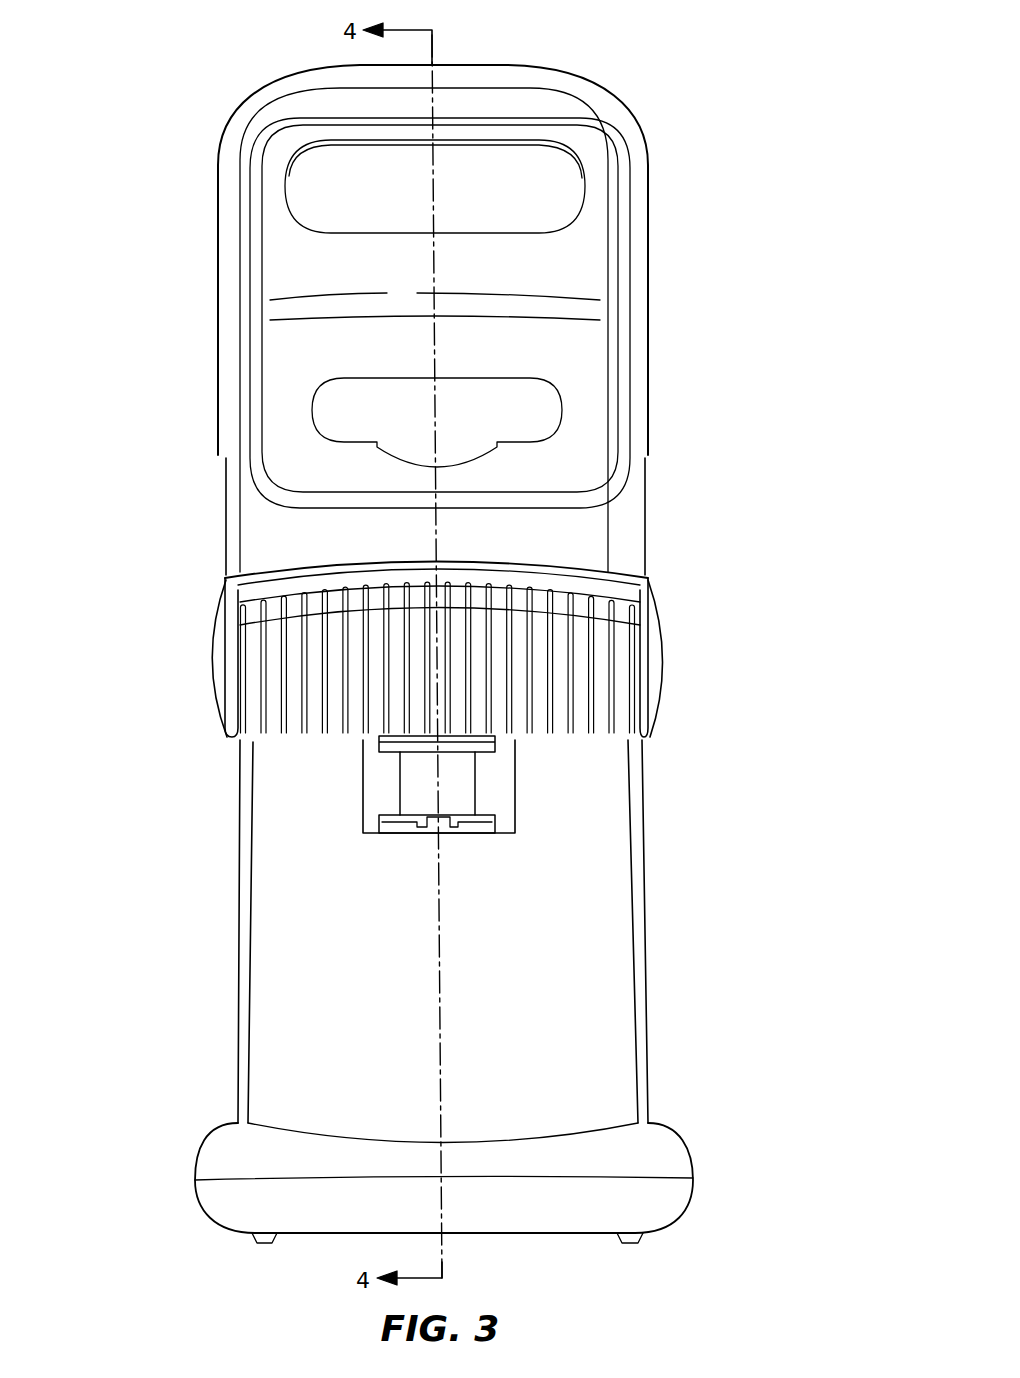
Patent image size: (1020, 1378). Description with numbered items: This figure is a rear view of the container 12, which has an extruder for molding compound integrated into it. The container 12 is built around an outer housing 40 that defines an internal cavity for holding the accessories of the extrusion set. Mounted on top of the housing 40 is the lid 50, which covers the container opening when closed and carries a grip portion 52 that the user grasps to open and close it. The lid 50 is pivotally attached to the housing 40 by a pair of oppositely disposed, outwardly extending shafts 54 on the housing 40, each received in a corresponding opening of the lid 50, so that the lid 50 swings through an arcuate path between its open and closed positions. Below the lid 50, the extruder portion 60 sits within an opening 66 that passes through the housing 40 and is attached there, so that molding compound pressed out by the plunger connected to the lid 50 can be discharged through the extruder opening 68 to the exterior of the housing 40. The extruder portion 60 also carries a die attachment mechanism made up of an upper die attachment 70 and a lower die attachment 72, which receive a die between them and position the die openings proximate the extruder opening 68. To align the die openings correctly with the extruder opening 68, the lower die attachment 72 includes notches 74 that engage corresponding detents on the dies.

The container 12 is at (121, 183).
The outer housing 40 is at (625, 1067).
The lid 50 is at (612, 93).
The grip portion 52 is at (555, 193).
The shafts 54 is at (240, 640).
The extruder portion 60 is at (502, 798).
The opening 66 is at (517, 783).
The extruder opening 68 is at (400, 775).
The upper die attachment 70 is at (495, 745).
The lower die attachment 72 is at (493, 825).
The notches 74 is at (448, 820).